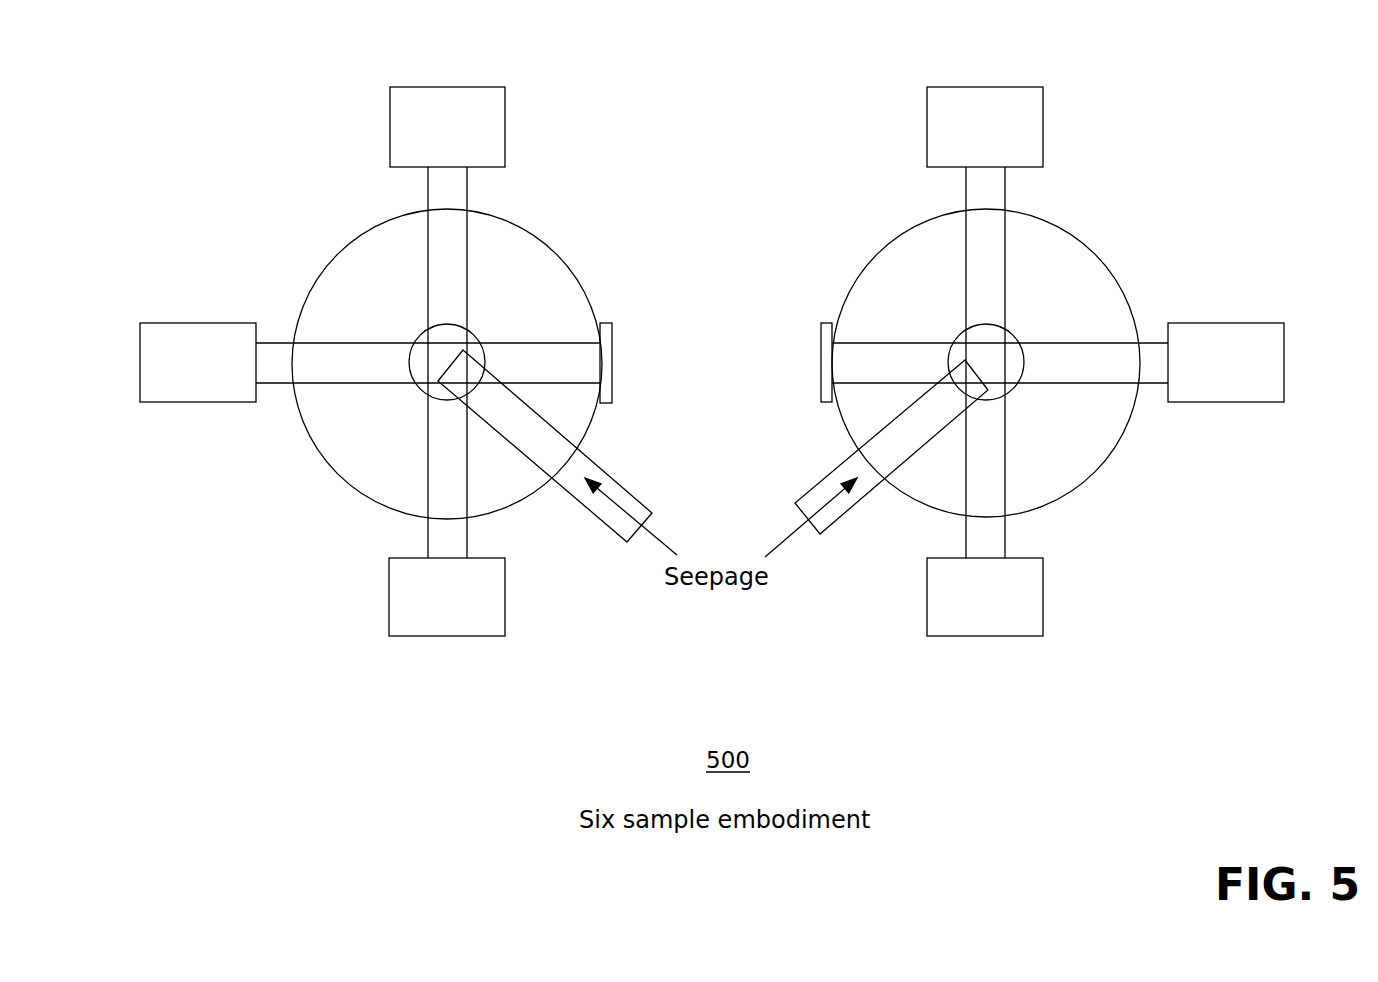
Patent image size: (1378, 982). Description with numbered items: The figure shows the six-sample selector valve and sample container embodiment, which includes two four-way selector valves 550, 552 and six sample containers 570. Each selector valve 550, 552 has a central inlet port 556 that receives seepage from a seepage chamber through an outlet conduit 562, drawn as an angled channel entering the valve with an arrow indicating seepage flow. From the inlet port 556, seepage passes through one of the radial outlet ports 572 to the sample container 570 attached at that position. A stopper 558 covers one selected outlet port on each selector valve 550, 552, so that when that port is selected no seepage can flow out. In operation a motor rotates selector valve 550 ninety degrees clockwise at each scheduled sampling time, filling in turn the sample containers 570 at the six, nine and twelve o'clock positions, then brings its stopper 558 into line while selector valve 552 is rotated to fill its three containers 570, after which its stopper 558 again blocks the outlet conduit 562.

The selector valve 550 is at (518, 263).
The selector valve 552 is at (927, 265).
The inlet port 556 is at (442, 343).
The stopper 558 is at (602, 378).
The outlet conduit 562 is at (585, 470).
The sample container 570 is at (487, 113).
The outlet port 572 is at (453, 190).